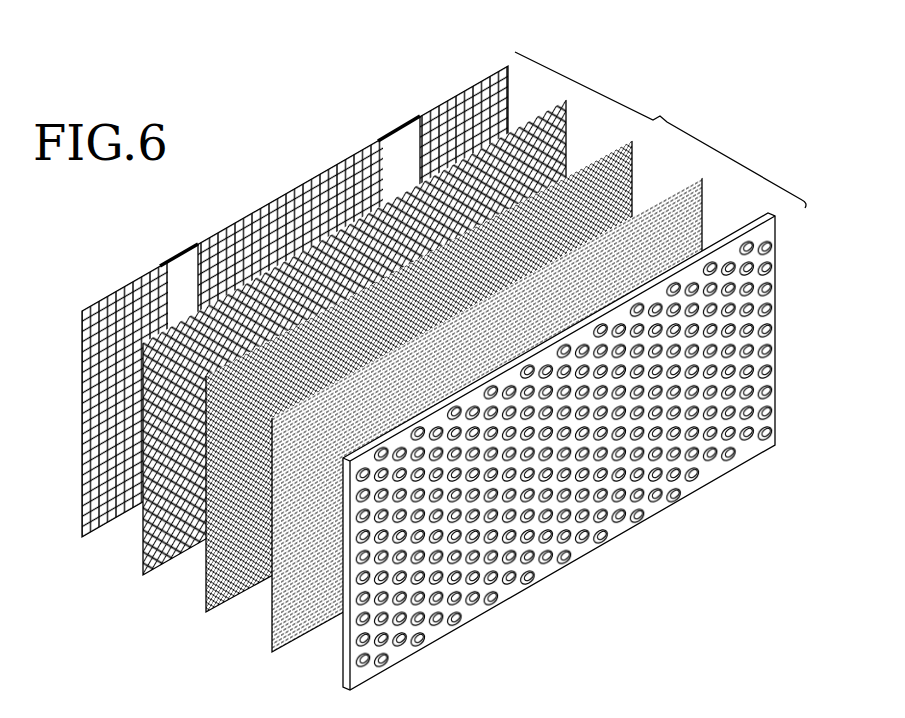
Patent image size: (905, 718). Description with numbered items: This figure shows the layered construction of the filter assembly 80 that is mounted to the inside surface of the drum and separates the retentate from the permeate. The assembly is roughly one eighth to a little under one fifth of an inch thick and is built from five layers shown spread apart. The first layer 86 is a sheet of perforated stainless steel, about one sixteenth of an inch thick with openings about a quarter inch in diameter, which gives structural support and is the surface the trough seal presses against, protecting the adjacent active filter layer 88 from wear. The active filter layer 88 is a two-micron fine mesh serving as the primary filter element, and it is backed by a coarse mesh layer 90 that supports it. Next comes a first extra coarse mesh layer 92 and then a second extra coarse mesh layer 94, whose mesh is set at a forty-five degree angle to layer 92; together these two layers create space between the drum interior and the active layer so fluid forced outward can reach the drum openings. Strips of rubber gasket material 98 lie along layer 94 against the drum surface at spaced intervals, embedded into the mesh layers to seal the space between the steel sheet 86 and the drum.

The filter assembly 80 is at (660, 130).
The perforated stainless steel sheet 86 is at (779, 333).
The active filter layer 88 is at (704, 203).
The coarse mesh layer 90 is at (634, 168).
The first extra coarse mesh layer 92 is at (570, 129).
The second extra coarse mesh layer 94 is at (447, 98).
The rubber gasket strips 98 is at (176, 266).